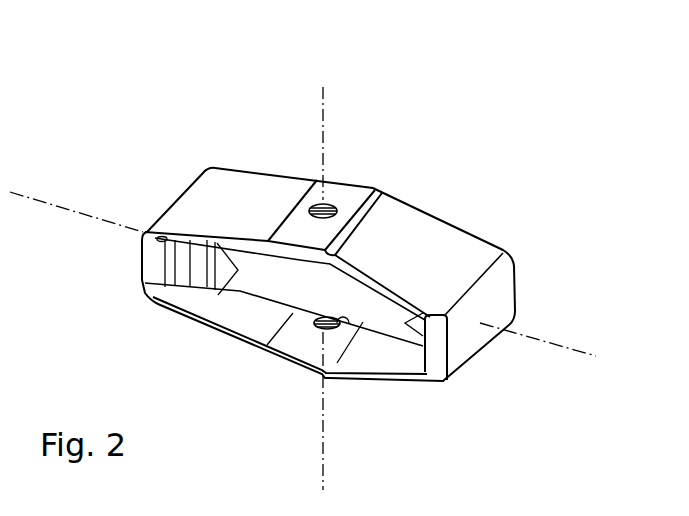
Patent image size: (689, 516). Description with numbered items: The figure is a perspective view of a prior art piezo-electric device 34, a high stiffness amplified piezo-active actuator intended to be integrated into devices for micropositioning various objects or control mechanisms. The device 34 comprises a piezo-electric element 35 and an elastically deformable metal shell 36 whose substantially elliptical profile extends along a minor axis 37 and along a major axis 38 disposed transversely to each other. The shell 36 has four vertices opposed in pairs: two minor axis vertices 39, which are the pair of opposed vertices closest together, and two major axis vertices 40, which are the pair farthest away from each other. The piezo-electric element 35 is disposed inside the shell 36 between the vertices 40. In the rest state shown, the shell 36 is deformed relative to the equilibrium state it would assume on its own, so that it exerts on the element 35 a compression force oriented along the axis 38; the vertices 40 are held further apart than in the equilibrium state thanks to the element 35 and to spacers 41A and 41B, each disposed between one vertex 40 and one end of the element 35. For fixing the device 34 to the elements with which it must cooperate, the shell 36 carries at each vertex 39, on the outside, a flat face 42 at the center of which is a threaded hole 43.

The piezo-electric device 34 is at (141, 126).
The piezo-electric element 35 is at (252, 288).
The elastically deformable metal shell 36 is at (228, 194).
The minor axis 37 is at (327, 96).
The major axis 38 is at (578, 344).
The minor axis vertices 39 is at (295, 249).
The major axis vertices 40 is at (148, 252).
The spacer 41A is at (184, 270).
The spacer 41B is at (195, 291).
The flat face 42 is at (309, 187).
The threaded hole 43 is at (332, 205).